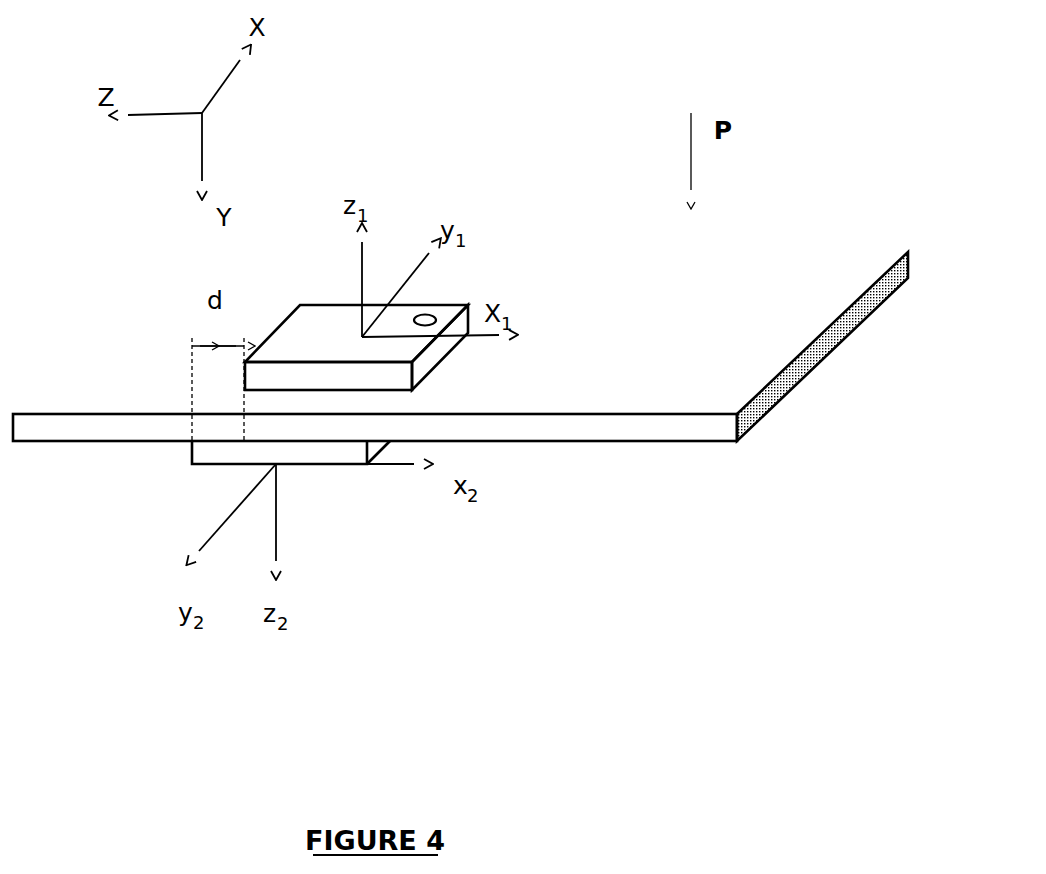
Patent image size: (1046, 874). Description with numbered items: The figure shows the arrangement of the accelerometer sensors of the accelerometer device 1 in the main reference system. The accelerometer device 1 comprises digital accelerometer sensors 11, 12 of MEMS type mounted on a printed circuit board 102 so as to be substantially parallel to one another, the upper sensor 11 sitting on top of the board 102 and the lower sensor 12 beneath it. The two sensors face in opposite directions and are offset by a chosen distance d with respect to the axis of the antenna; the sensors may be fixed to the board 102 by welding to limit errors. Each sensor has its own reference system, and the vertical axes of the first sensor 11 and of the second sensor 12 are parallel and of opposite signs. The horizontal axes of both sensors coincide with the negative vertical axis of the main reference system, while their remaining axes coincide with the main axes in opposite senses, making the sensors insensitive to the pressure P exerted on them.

The accelerometer device 1 is at (489, 645).
The first accelerometer sensor 11 is at (342, 318).
The second accelerometer sensor 12 is at (340, 453).
The printed circuit board 102 is at (63, 432).